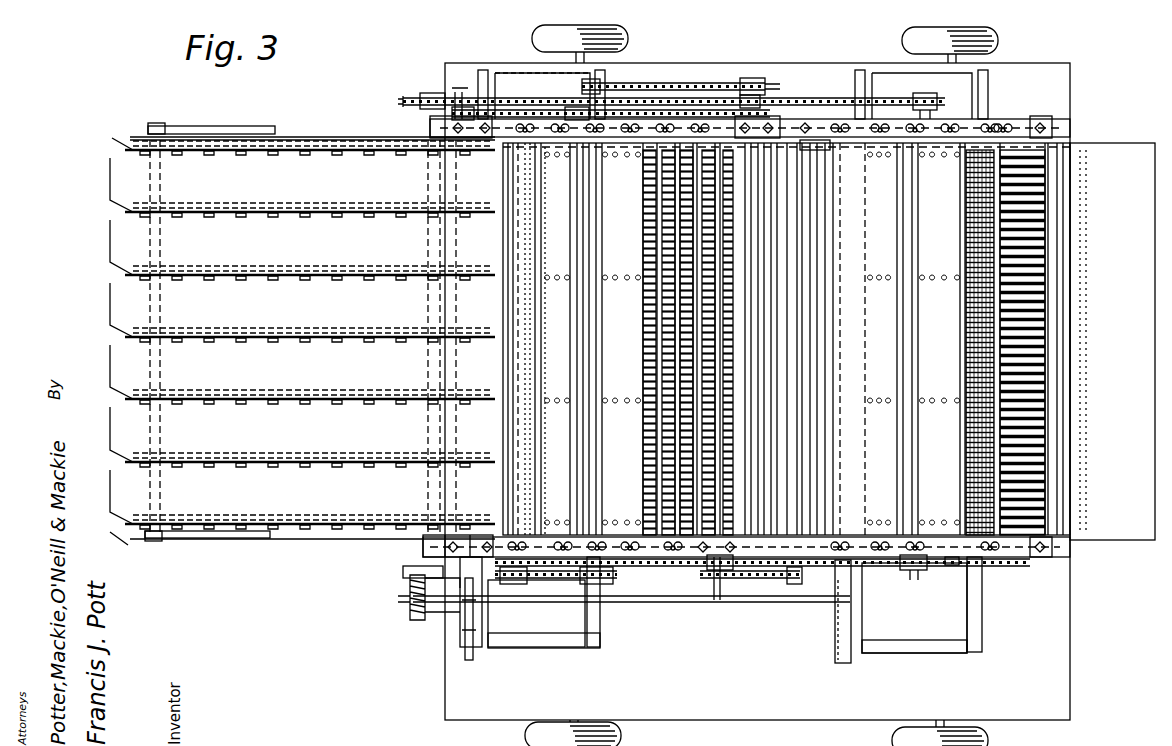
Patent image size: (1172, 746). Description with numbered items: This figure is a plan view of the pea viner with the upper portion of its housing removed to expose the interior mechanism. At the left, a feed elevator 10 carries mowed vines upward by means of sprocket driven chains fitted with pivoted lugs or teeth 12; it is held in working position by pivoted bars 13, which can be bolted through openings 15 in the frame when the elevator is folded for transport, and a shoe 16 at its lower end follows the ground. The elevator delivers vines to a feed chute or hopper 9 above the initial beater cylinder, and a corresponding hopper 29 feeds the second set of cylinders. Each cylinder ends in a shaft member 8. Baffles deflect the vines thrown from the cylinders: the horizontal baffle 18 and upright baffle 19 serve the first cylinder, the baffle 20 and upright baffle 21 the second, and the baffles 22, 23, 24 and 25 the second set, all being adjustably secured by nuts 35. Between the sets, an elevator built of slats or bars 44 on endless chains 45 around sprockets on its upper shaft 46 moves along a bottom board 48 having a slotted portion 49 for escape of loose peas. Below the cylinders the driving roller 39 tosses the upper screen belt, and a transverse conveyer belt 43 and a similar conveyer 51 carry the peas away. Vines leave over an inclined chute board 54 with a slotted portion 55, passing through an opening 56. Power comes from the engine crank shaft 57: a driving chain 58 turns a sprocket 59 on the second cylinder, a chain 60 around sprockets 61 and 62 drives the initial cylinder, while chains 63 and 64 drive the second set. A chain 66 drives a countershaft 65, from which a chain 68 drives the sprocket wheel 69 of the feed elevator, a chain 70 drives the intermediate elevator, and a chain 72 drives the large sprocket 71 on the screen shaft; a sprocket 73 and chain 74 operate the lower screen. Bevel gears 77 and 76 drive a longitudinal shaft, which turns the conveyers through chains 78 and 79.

The shaft member 8 is at (923, 100).
The feed chute or hopper 9 is at (525, 210).
The elevator 10 is at (115, 295).
The pivoted lugs or teeth 12 is at (236, 212).
The pivoted bars 13 is at (300, 136).
The openings 15 is at (675, 600).
The shoe 16 is at (258, 128).
The baffle 18 is at (552, 160).
The upright baffle 19 is at (600, 452).
The baffle 20 is at (622, 200).
The upright baffle 21 is at (595, 518).
The baffle 22 is at (880, 470).
The upright baffle 23 is at (914, 205).
The baffle 24 is at (947, 167).
The upright baffle 25 is at (975, 492).
The feed chute or hopper 29 is at (858, 432).
The nuts 35 is at (1003, 132).
The driving roller 39 is at (437, 92).
The conveyer belt or apron 43 is at (540, 642).
The slats or bars 44 is at (598, 383).
The endless chains 45 is at (810, 147).
The shaft 46 is at (790, 597).
The base or bottom board 48 is at (789, 145).
The slotted portion 49 is at (728, 170).
The conveyer or travelling apron 51 is at (928, 638).
The inclined chute board 54 is at (1120, 535).
The slotted portion 55 is at (1050, 473).
The opening 56 is at (1040, 248).
The crank shaft 57 is at (750, 80).
The driving chain 58 is at (618, 82).
The sprocket 59 is at (607, 75).
The chain 60 is at (558, 585).
The sprocket 61 is at (602, 578).
The sprocket 62 is at (527, 584).
The chain 63 is at (812, 98).
The chain 64 is at (892, 568).
The countershaft 65 is at (722, 578).
The chain 66 is at (705, 568).
The chain 68 is at (692, 108).
The sprocket wheel 69 is at (458, 103).
The chain 70 is at (785, 580).
The sprocket 71 is at (403, 100).
The chain 72 is at (652, 96).
The sprocket 73 is at (420, 548).
The chain 74 is at (403, 573).
The bevel gear 76 is at (425, 612).
The bevel gear 77 is at (408, 598).
The chain 78 is at (462, 622).
The chain 79 is at (837, 627).